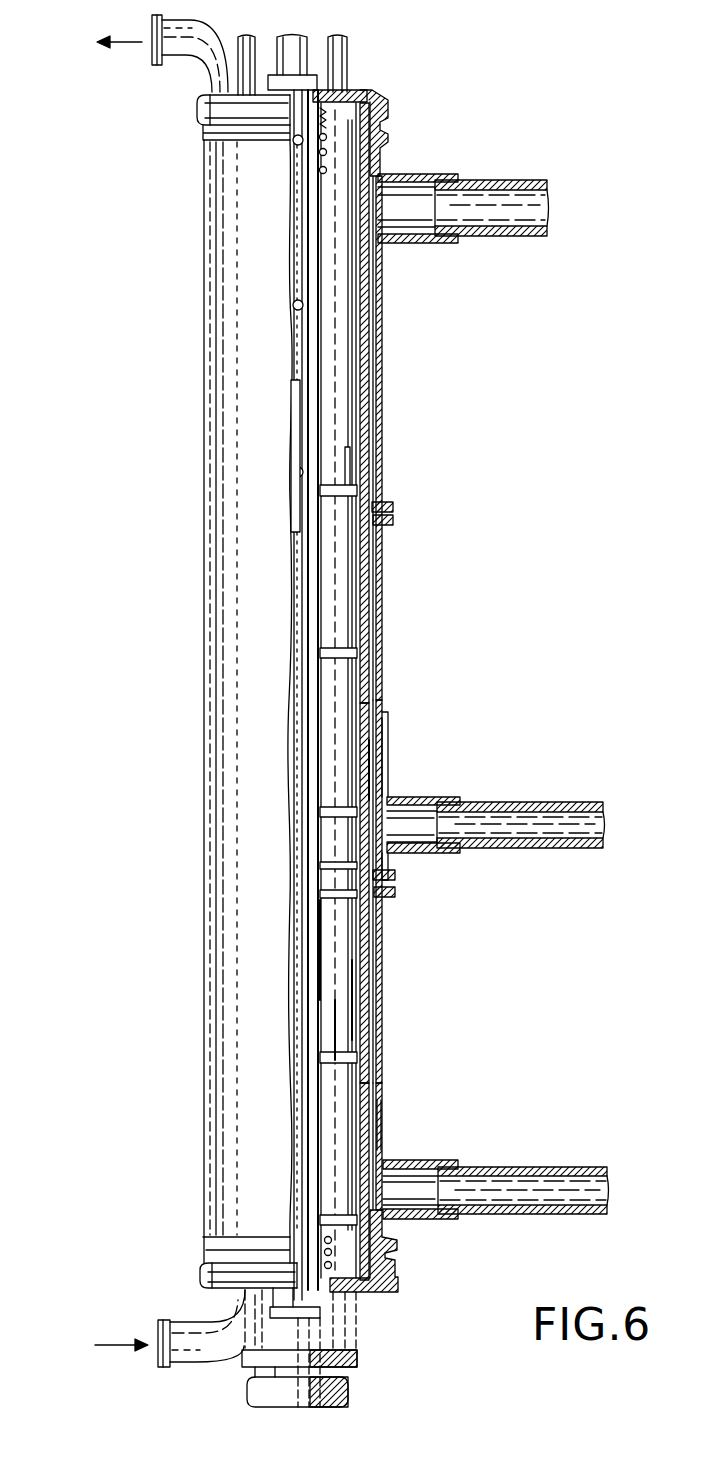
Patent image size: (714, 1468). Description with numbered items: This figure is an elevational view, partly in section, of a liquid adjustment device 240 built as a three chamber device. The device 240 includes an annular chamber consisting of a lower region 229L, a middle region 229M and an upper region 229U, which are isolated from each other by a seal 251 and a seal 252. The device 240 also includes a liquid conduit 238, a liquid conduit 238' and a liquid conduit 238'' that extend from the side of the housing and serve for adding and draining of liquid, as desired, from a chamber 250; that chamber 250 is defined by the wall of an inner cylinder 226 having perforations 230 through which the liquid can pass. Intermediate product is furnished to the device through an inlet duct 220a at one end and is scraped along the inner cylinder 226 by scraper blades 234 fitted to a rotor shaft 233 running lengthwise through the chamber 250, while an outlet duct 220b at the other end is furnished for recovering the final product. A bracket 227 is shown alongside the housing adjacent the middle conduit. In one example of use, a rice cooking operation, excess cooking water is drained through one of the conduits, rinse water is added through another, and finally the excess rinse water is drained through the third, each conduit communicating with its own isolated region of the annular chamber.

The inlet duct 220a is at (196, 1364).
The outlet duct 220b is at (154, 62).
The inner cylinder 226 is at (367, 767).
The mounting bracket 227 is at (389, 760).
The upper region 229U is at (370, 382).
The middle region 229M is at (371, 729).
The lower region 229L is at (376, 1083).
The perforations 230 is at (371, 1153).
The rotor shaft 233 is at (325, 957).
The scraper blades 234 is at (355, 1000).
The liquid conduit 238 is at (523, 1202).
The liquid conduit 238' is at (531, 835).
The liquid conduit 238'' is at (497, 219).
The liquid adjustment device 240 is at (176, 680).
The chamber 250 is at (338, 1026).
The seal 251 is at (395, 899).
The seal 252 is at (394, 522).